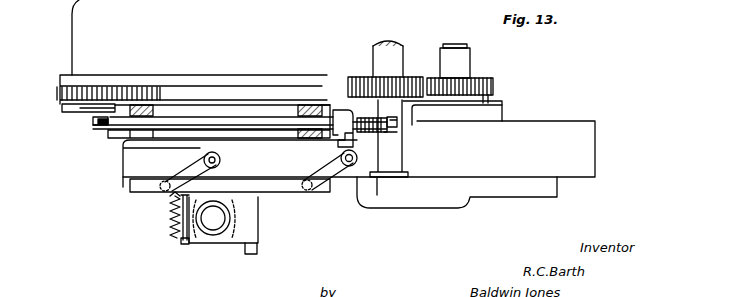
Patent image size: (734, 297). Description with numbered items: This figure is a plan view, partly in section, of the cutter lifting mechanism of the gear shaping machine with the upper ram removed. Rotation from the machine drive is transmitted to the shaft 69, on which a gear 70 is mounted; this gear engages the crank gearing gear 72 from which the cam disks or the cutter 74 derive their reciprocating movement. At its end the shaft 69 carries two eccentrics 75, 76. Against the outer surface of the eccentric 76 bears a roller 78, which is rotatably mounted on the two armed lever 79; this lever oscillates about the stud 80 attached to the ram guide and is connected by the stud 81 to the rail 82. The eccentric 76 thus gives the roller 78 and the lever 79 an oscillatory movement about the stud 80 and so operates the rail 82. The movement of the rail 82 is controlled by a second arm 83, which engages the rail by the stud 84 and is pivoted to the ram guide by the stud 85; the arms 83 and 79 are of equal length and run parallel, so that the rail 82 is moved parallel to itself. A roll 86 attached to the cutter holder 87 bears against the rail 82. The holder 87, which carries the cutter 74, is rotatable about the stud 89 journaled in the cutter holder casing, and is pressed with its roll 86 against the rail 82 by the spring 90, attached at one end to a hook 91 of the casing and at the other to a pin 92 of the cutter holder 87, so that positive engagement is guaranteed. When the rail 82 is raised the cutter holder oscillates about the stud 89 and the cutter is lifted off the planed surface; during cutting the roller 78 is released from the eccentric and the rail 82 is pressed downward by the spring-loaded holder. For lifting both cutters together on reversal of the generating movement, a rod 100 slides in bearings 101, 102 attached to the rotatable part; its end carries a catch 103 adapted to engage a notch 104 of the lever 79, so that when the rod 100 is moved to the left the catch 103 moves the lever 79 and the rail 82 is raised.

The shaft 69 is at (397, 57).
The gear 70 is at (359, 81).
The crank gearing gear 72 is at (484, 82).
The cutter 74 is at (251, 256).
The eccentric 75 is at (397, 123).
The eccentric 76 is at (383, 128).
The roller 78 is at (363, 118).
The two armed lever 79 is at (335, 176).
The stud 80 is at (352, 167).
The stud 81 is at (307, 191).
The rail 82 is at (260, 190).
The second arm 83 is at (188, 177).
The stud 84 is at (158, 188).
The stud 85 is at (188, 154).
The roll 86 is at (173, 231).
The cutter holder 87 is at (230, 236).
The stud 89 is at (212, 226).
The spring 90 is at (181, 203).
The hook 91 is at (176, 198).
The pin 92 is at (182, 243).
The rod 100 is at (94, 124).
The bearing 101 is at (135, 112).
The bearing 102 is at (305, 107).
The catch 103 is at (343, 118).
The notch 104 is at (357, 127).